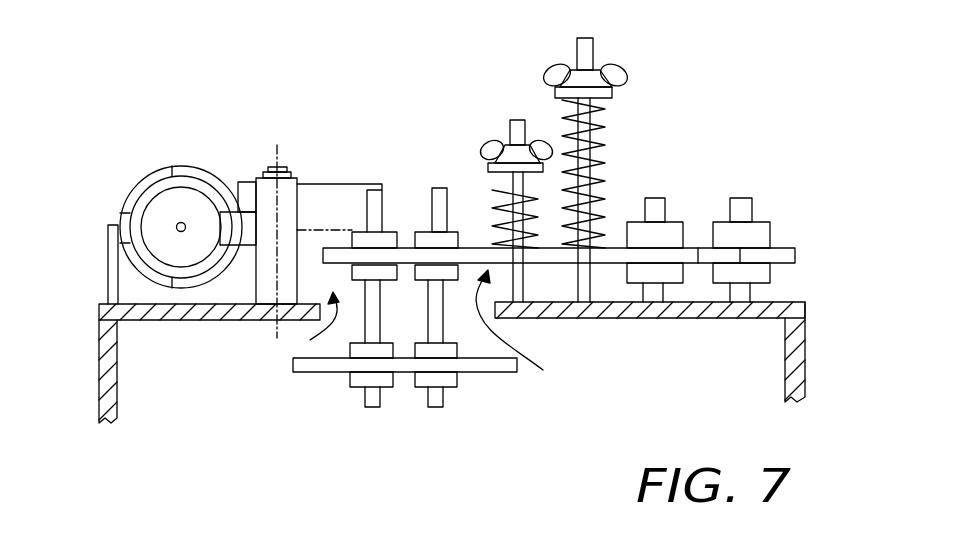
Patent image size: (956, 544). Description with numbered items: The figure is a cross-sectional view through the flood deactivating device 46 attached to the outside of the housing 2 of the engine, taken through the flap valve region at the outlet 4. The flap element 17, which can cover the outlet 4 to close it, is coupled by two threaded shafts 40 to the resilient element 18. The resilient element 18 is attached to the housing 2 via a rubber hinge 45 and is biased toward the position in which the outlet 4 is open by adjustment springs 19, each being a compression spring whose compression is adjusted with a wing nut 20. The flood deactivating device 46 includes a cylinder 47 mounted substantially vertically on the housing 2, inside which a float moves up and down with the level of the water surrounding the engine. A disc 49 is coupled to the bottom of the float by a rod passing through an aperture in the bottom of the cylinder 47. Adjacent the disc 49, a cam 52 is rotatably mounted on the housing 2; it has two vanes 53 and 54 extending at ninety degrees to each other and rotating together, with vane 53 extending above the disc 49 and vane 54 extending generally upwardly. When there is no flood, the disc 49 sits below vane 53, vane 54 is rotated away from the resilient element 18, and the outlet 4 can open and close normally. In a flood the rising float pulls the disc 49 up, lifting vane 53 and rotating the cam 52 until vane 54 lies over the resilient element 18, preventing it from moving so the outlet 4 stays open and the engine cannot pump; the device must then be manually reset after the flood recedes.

The housing 2 is at (805, 343).
The outlet 4 is at (503, 325).
The flap element 17 is at (325, 365).
The resilient element 18 is at (407, 255).
The compression spring 19 is at (512, 207).
The wing nut 20 is at (548, 140).
The threaded shaft 40 is at (373, 327).
The rubber hinge 45 is at (670, 230).
The flood deactivating device 46 is at (685, 160).
The cylinder 47 is at (132, 183).
The disc 49 is at (183, 250).
The cam 52 is at (267, 164).
The vane 53 is at (230, 232).
The vane 54 is at (247, 192).